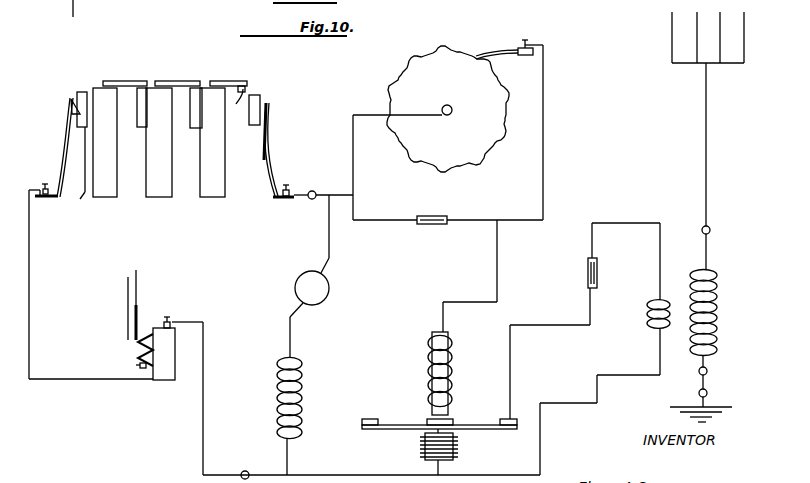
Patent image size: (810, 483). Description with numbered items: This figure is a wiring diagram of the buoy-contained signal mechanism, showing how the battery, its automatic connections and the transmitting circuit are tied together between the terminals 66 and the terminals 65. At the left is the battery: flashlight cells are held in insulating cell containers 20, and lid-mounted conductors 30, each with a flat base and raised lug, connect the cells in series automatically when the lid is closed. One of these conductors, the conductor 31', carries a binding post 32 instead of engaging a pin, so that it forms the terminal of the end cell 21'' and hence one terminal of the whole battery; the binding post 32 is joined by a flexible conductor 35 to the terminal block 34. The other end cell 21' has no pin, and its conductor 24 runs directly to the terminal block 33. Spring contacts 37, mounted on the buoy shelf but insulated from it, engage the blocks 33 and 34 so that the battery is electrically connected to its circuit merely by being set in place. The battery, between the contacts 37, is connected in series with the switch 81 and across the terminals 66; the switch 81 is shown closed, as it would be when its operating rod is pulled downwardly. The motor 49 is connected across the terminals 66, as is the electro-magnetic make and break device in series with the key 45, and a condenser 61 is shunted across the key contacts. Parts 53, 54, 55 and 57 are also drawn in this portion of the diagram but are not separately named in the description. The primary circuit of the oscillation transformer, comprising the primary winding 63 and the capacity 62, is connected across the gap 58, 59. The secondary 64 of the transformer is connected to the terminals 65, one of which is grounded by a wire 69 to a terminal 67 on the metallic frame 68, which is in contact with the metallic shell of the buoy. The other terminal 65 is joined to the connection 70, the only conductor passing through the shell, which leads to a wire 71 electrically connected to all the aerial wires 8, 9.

The aerial wire 8 is at (671, 22).
The aerial wire 9 is at (70, 18).
The cell container 20 is at (160, 198).
The end cell 21' is at (113, 154).
The end cell 21'' is at (229, 146).
The conductor 24 is at (73, 172).
The conductor 30 is at (130, 80).
The conductor 31' is at (232, 77).
The binding post 32 is at (237, 106).
The terminal block 33 is at (82, 91).
The terminal block 34 is at (256, 126).
The flexible conductor 35 is at (256, 94).
The spring contact 37 is at (65, 143).
The key 45 is at (448, 109).
The motor 49 is at (295, 318).
The brush 53 is at (492, 51).
The solenoid winding 54 is at (452, 368).
The solenoid core 55 is at (437, 334).
The armature bar 57 is at (386, 424).
The gap 58 is at (453, 421).
The gap 59 is at (453, 450).
The condenser 61 is at (432, 210).
The capacity 62 is at (603, 273).
The primary winding 63 is at (664, 308).
The secondary 64 is at (714, 313).
The terminal 65 is at (714, 299).
The terminal 66 is at (280, 326).
The terminal 67 is at (713, 394).
The metallic frame 68 is at (713, 416).
The wire 69 is at (700, 383).
The connection to the aerial 70 is at (708, 169).
The wire 71 is at (680, 65).
The switch 81 is at (137, 319).